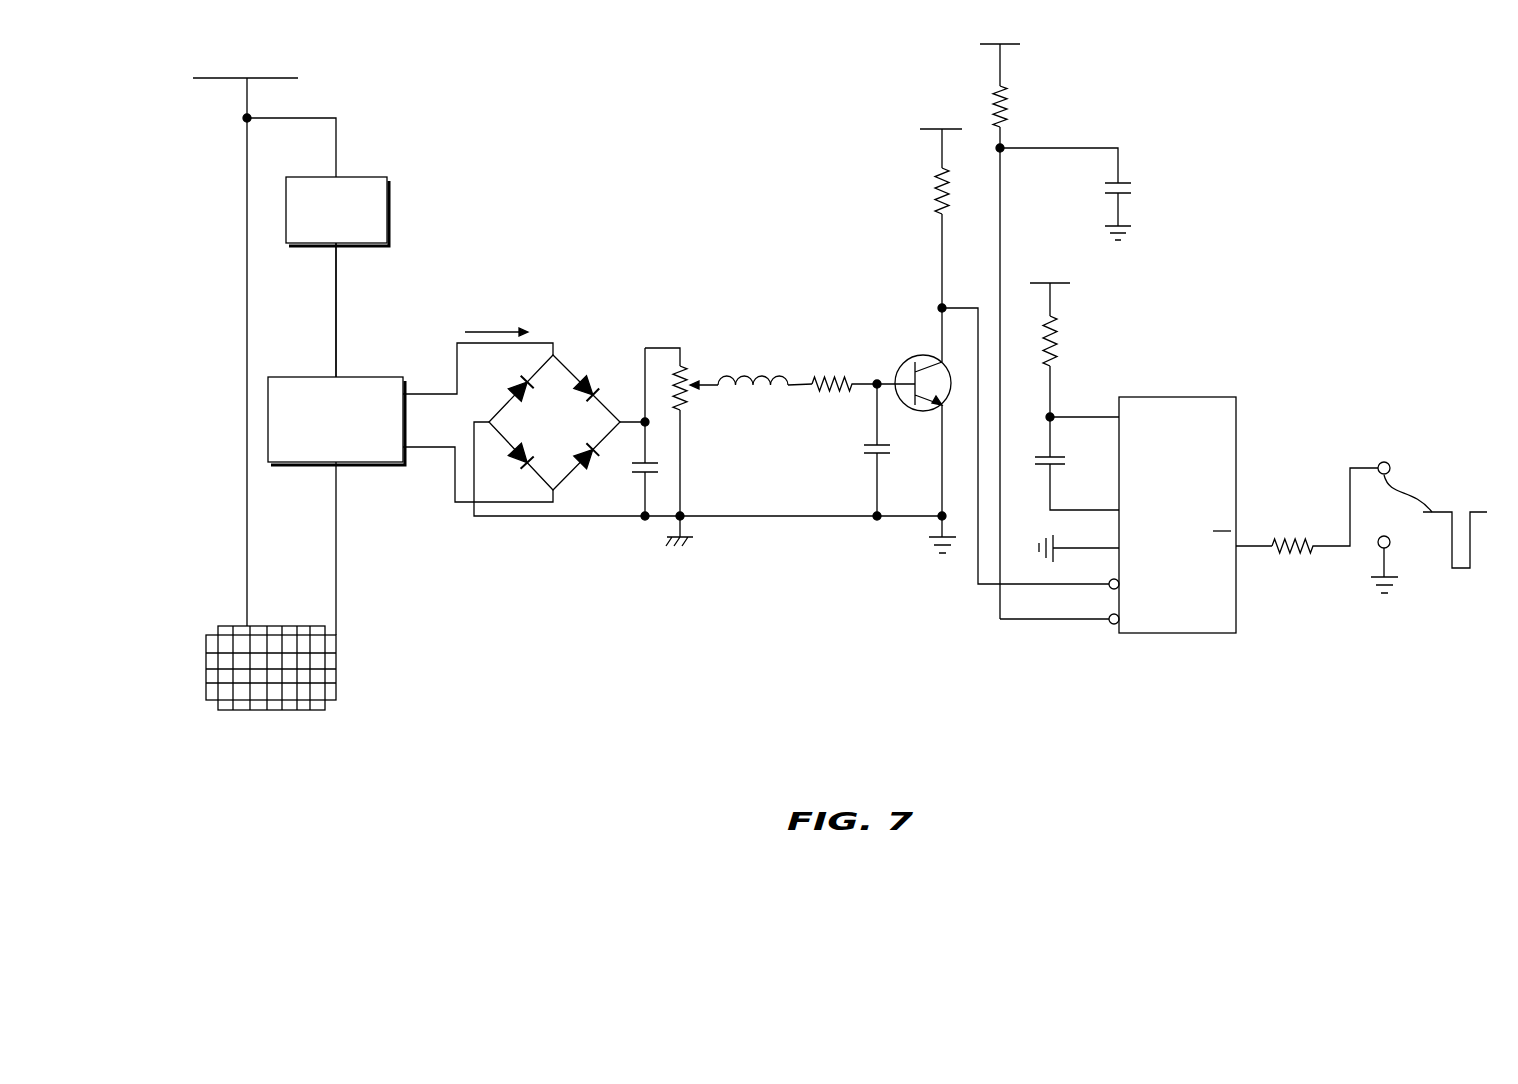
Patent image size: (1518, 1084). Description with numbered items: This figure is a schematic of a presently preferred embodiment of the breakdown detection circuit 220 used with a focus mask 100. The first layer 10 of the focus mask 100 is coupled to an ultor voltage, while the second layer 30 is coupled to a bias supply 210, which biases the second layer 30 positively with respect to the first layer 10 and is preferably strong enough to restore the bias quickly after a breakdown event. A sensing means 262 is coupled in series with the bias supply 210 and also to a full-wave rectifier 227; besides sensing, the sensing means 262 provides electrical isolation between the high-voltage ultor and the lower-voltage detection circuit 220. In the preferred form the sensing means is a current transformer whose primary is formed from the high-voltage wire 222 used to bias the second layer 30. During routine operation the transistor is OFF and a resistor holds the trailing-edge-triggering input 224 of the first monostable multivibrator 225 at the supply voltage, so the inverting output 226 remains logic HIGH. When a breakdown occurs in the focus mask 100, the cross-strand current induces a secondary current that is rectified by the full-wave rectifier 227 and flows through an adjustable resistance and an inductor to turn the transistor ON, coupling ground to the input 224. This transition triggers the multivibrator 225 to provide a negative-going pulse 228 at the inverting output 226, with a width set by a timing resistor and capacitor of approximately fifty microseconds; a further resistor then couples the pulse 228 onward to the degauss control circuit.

The first layer 10 is at (273, 626).
The second layer 30 is at (200, 743).
The focus mask 100 is at (305, 553).
The bias supply 210 is at (388, 210).
The breakdown detection circuit 220 is at (683, 70).
The high-voltage wire 222 is at (336, 323).
The trailing-edge-triggering input 224 is at (1103, 584).
The first monostable multivibrator 225 is at (1200, 506).
The inverting output 226 is at (1237, 548).
The full-wave rectifier 227 is at (565, 362).
The negative-going pulse 228 is at (1452, 553).
The sensing means 262 is at (375, 463).